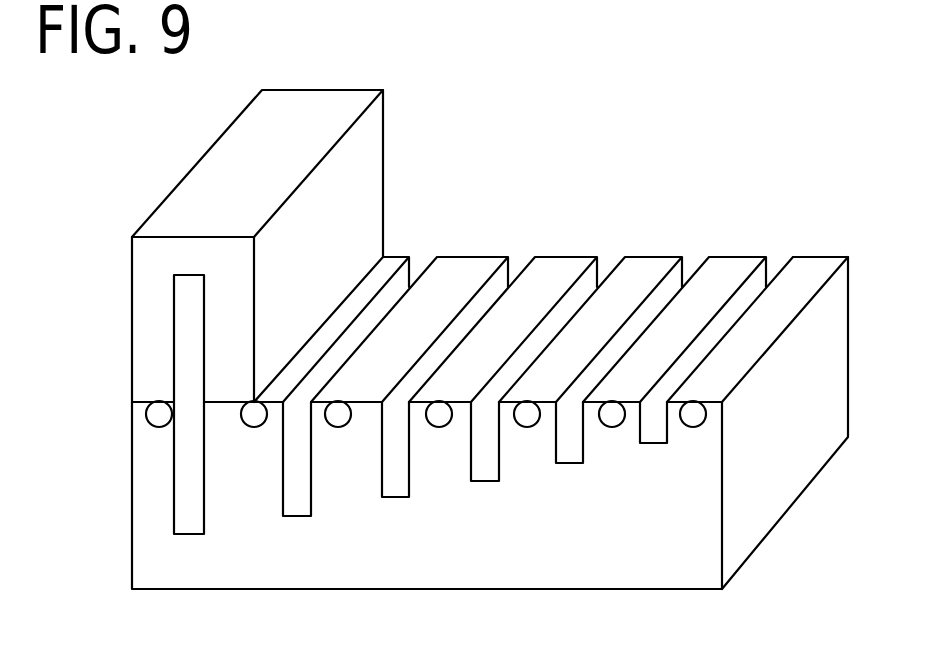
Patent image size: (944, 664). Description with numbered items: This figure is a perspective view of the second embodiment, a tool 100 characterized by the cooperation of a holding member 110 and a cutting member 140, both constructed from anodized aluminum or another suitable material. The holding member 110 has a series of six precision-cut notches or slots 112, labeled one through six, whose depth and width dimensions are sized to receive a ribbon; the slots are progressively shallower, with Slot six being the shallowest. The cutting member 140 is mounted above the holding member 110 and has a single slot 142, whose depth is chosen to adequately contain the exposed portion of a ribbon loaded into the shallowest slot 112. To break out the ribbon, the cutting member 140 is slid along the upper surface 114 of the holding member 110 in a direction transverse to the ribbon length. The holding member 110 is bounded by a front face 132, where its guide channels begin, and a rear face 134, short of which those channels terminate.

The tool 100 is at (146, 178).
The holding member 110 is at (134, 470).
The slots 112 is at (185, 508).
The upper surface 114 is at (808, 262).
The front face 132 is at (682, 524).
The rear face 134 is at (642, 255).
The cutting member 140 is at (133, 315).
The cutting member slot 142 is at (187, 360).